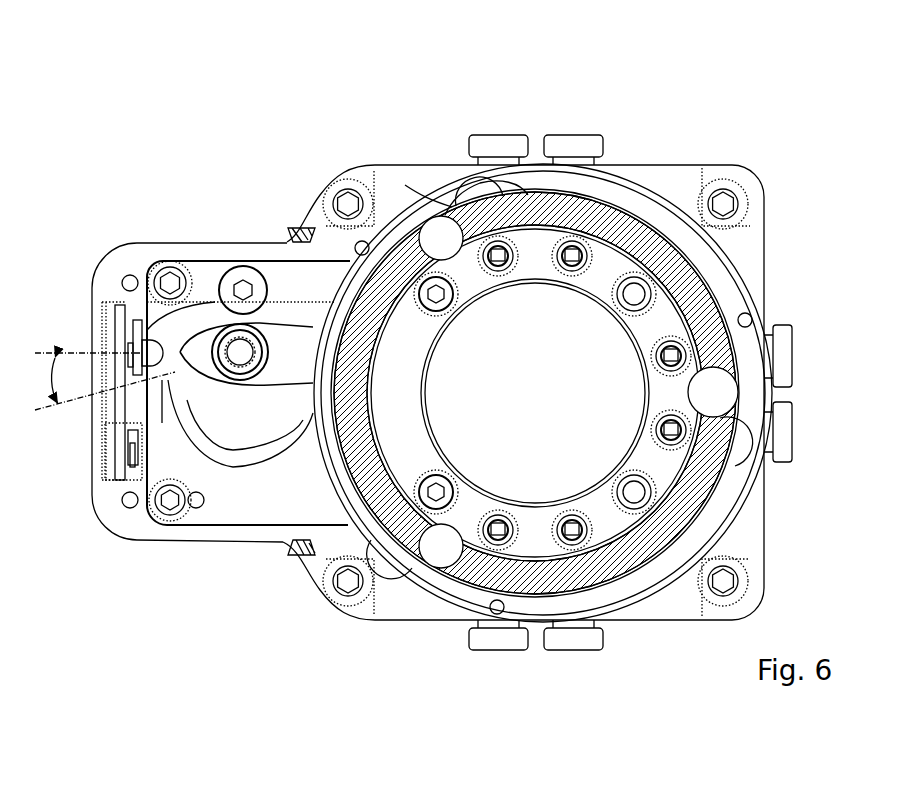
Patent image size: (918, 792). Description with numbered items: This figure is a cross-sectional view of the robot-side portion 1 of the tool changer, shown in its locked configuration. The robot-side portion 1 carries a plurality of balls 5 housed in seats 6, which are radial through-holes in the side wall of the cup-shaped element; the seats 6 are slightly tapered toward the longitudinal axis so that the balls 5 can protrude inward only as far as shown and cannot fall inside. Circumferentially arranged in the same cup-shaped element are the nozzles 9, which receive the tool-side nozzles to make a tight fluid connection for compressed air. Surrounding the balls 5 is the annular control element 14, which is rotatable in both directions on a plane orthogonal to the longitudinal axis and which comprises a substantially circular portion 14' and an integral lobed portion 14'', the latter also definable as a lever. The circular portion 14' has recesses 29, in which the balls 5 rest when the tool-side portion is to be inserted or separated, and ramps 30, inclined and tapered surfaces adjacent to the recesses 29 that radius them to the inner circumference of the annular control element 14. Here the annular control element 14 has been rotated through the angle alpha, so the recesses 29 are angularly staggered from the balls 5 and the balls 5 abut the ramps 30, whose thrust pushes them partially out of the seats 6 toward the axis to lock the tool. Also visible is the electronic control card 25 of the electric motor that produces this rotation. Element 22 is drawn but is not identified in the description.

The robot-side portion 1 is at (482, 118).
The balls 5 is at (722, 383).
The seats 6 is at (740, 402).
The nozzles 9 is at (522, 548).
The annular control element 14 is at (543, 351).
The circular portion 14' is at (567, 392).
The lobed portion 14'' is at (221, 423).
The pivot pin 22 is at (240, 347).
The electronic control card 25 is at (118, 333).
The recesses 29 is at (470, 186).
The ramps 30 is at (430, 222).